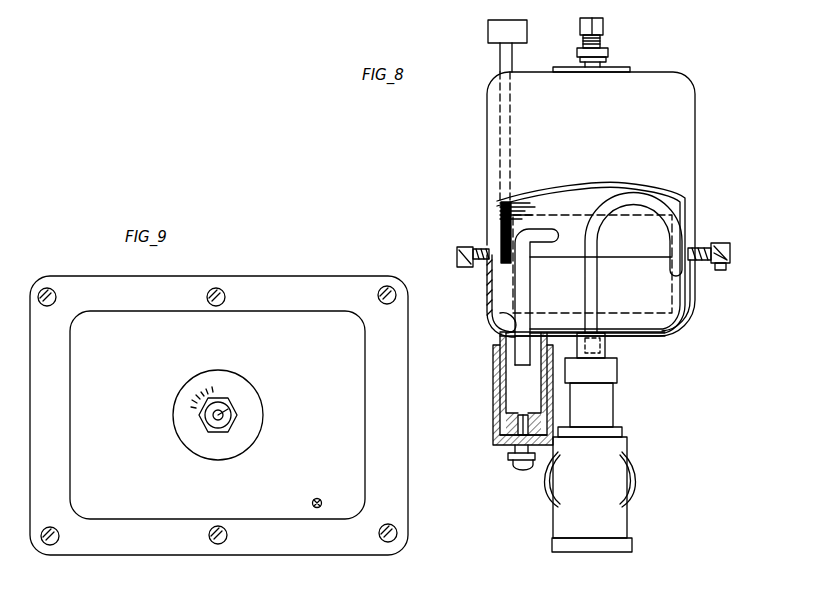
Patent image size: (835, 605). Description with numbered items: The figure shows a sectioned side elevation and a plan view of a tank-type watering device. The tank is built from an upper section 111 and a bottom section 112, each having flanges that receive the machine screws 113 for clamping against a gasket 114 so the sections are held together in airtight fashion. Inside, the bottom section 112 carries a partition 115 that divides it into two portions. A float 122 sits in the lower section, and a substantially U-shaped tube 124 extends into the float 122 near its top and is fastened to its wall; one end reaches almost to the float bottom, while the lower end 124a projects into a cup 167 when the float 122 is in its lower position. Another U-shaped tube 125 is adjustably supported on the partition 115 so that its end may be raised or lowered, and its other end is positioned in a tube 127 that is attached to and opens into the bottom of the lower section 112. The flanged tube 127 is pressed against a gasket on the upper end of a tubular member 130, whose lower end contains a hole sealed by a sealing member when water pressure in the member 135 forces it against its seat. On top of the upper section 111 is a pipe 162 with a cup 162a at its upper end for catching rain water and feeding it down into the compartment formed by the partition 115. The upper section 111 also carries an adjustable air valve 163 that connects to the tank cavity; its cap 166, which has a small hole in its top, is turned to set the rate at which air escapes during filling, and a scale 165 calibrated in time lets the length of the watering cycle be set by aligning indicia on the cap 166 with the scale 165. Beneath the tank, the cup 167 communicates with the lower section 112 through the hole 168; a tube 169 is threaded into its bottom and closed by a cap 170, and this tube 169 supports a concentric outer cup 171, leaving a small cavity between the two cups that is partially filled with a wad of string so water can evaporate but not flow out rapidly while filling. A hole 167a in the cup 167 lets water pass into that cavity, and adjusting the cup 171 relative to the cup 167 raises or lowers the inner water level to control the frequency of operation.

In FIG. 8, the upper tank section 111 is at (488, 105).
In FIG. 9, the upper tank section 111 is at (133, 423).
In FIG. 8, the bottom tank section 112 is at (690, 302).
In FIG. 8, the machine screws 113 is at (465, 246).
In FIG. 9, the machine screws 113 is at (388, 542).
In FIG. 8, the gasket 114 is at (458, 255).
In FIG. 8, the partition 115 is at (569, 286).
In FIG. 8, the float 122 is at (557, 222).
In FIG. 8, the U-shaped tube 124 is at (523, 280).
In FIG. 8, the lower end of U-shaped tube 124a is at (522, 366).
In FIG. 8, the U-shaped tube 125 is at (591, 283).
In FIG. 8, the tube 127 is at (606, 350).
In FIG. 8, the tubular member 130 is at (600, 403).
In FIG. 8, the member 135 is at (616, 523).
In FIG. 8, the pipe 162 is at (506, 222).
In FIG. 9, the pipe 162 is at (316, 499).
In FIG. 8, the cup 162a is at (464, 34).
In FIG. 8, the adjustable air valve 163 is at (601, 45).
In FIG. 8, the scale 165 is at (627, 66).
In FIG. 9, the scale 165 is at (251, 405).
In FIG. 8, the cap 166 is at (602, 27).
In FIG. 9, the cap 166 is at (223, 411).
In FIG. 8, the cup 167 is at (497, 357).
In FIG. 8, the hole 167a is at (496, 397).
In FIG. 8, the hole 168 is at (497, 313).
In FIG. 8, the tube 169 is at (498, 428).
In FIG. 8, the cap 170 is at (516, 466).
In FIG. 8, the cup 171 is at (495, 446).